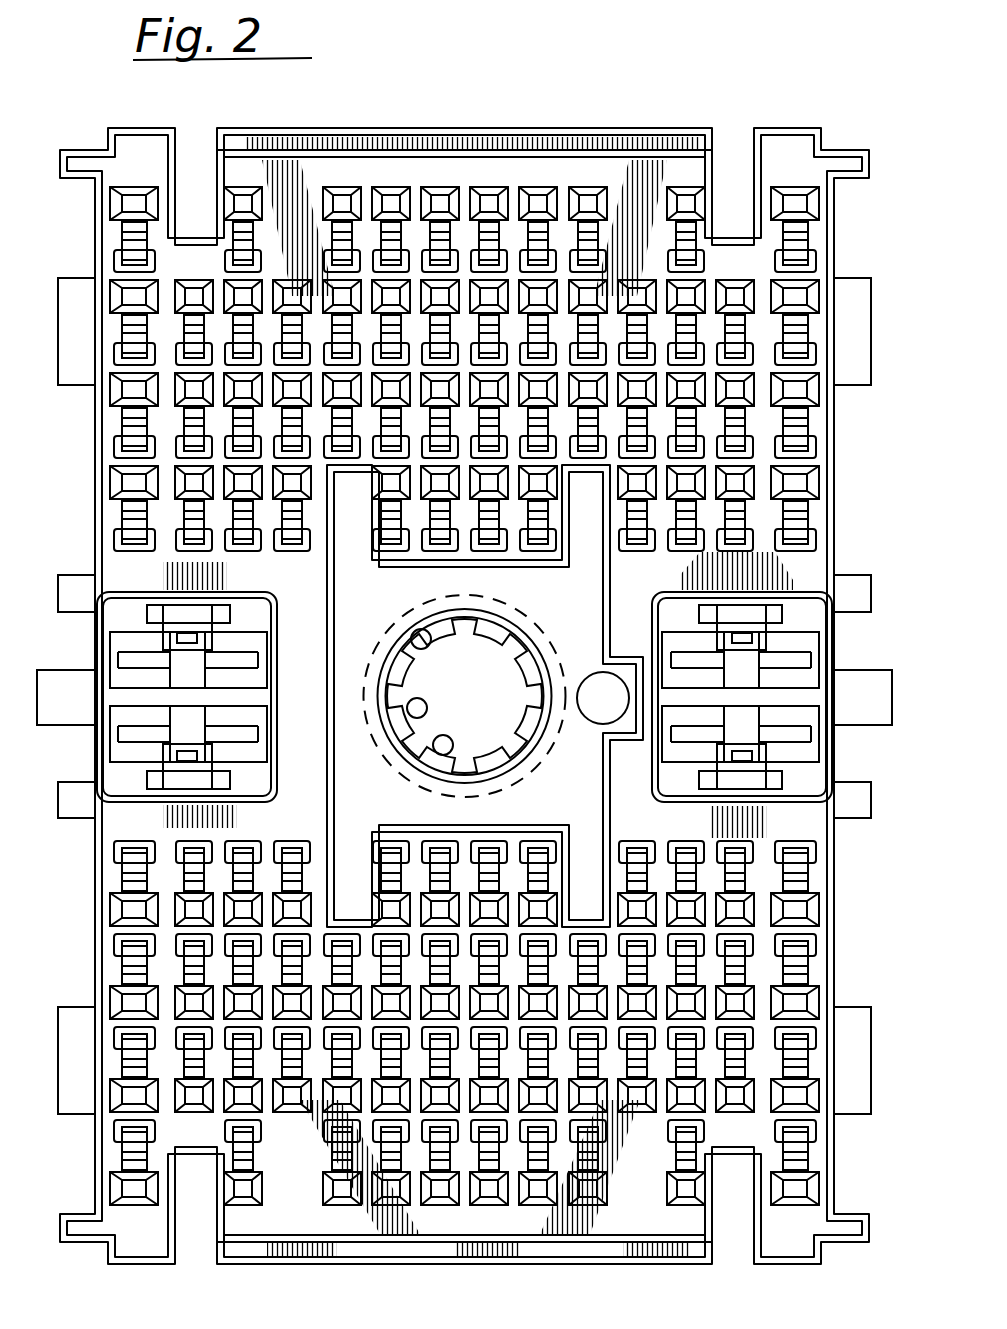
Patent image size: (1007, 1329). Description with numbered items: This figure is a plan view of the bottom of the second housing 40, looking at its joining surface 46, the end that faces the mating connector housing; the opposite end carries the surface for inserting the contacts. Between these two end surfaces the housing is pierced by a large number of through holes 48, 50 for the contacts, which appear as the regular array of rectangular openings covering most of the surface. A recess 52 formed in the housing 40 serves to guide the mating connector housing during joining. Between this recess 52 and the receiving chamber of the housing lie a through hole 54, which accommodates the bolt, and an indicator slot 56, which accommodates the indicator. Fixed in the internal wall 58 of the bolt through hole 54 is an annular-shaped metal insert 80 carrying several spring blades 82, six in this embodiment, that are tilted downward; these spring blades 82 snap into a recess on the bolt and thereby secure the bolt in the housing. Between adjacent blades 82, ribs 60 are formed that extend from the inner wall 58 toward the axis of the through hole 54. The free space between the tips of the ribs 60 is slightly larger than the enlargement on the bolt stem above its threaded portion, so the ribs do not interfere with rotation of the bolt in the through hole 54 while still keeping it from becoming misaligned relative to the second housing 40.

The second housing 40 is at (803, 98).
The joining surface 46 is at (310, 196).
The through hole 48 is at (793, 660).
The through hole 50 is at (683, 207).
The recess 52 is at (382, 582).
The through hole 54 is at (466, 701).
The indicator slot 56 is at (604, 710).
The internal wall 58 is at (421, 641).
The ribs 60 is at (433, 748).
The annular-shaped metal insert 80 is at (533, 601).
The spring blades 82 is at (424, 742).